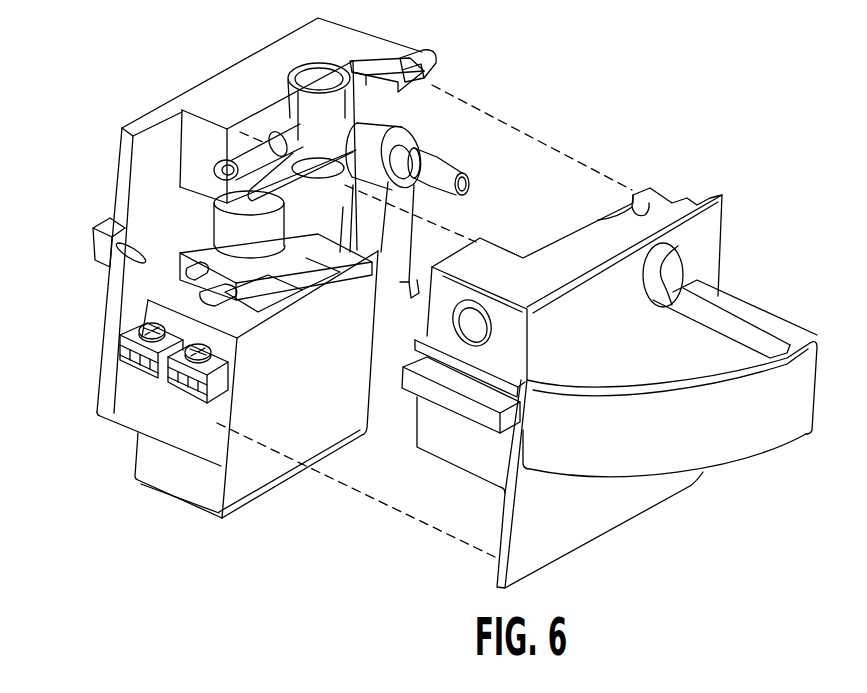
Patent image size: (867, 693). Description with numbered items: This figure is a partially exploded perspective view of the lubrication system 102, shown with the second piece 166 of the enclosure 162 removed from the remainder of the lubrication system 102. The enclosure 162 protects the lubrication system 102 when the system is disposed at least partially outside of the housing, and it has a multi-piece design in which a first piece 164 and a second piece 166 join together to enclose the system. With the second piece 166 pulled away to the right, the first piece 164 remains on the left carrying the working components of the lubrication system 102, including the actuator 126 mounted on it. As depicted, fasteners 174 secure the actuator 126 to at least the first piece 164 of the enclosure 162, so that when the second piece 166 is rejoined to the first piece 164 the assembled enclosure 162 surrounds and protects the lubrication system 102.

The lubrication system 102 is at (609, 385).
The actuator 126 is at (160, 497).
The enclosure 162 is at (675, 197).
The first piece 164 is at (133, 302).
The second piece 166 is at (743, 337).
The fasteners 174 is at (210, 372).